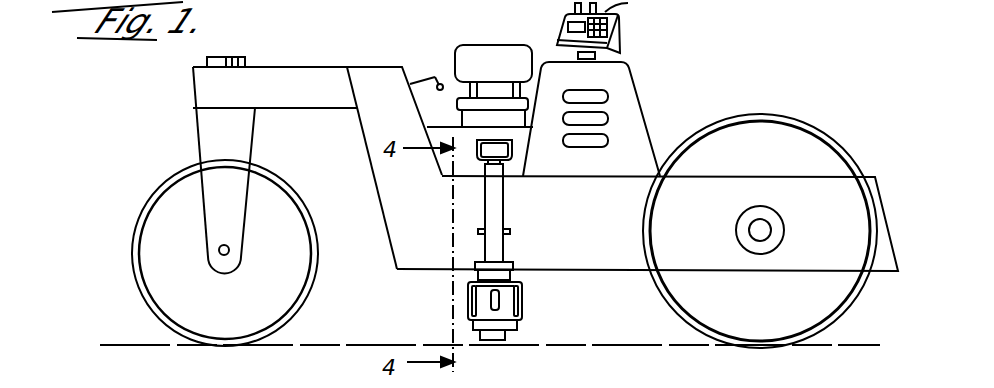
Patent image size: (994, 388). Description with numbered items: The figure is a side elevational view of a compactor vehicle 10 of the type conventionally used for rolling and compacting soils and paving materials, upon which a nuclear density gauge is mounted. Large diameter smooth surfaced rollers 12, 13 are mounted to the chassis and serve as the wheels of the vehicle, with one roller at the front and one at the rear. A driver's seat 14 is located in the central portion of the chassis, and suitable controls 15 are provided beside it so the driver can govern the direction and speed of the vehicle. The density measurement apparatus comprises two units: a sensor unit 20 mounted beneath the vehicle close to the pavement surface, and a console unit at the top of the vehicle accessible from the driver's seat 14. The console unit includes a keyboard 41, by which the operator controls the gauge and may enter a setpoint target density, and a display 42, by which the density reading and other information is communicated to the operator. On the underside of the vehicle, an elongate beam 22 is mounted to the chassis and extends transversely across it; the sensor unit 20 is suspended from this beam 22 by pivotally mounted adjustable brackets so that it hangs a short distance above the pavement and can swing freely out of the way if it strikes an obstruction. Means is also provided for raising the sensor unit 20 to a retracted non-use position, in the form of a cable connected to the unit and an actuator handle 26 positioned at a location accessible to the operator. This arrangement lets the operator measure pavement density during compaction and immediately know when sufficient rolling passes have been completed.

The compactor vehicle 10 is at (436, 289).
The roller 12 is at (135, 228).
The roller 13 is at (807, 123).
The driver's seat 14 is at (500, 58).
The controls 15 is at (444, 80).
The sensor unit 20 is at (515, 336).
The elongate beam 22 is at (512, 268).
The actuator handle 26 is at (500, 139).
The keyboard 41 is at (622, 26).
The display 42 is at (566, 27).